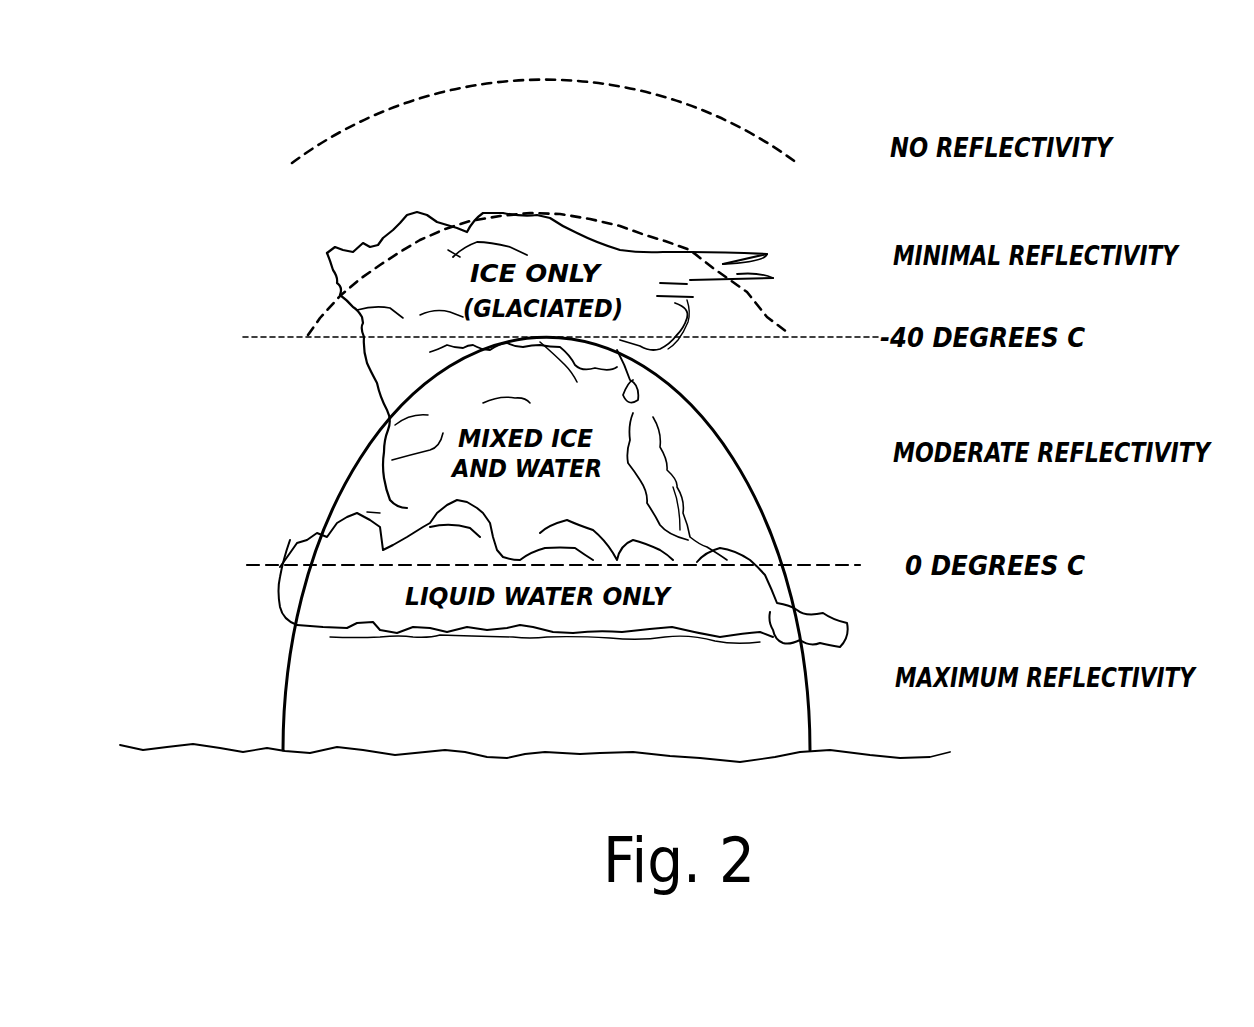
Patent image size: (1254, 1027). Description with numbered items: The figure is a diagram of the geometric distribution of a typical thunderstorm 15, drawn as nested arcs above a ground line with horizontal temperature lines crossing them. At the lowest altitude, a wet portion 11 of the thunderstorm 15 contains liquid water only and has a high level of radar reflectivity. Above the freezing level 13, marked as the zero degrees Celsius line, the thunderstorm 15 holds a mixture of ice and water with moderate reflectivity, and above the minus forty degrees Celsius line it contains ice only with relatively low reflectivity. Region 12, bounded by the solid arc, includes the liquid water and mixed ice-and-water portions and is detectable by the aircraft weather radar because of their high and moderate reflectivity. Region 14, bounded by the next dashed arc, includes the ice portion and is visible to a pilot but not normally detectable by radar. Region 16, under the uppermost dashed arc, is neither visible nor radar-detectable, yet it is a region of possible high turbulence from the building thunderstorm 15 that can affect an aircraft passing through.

The wet portion 11 is at (707, 640).
The region detectable by radar 12 is at (730, 457).
The freezing level 13 is at (816, 565).
The region visible but not radar-detectable 14 is at (632, 228).
The thunderstorm 15 is at (784, 92).
The region of little or no radar reflectivity 16 is at (640, 88).